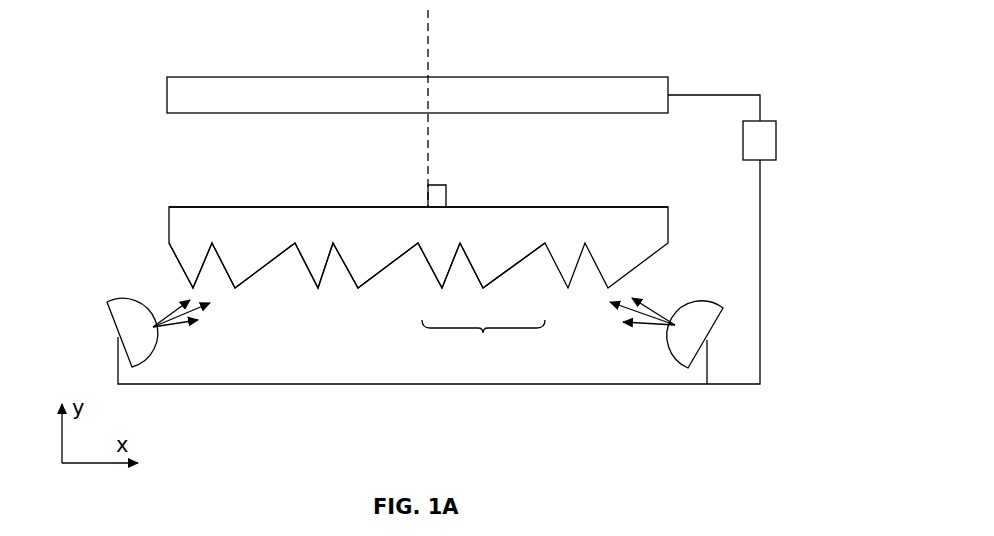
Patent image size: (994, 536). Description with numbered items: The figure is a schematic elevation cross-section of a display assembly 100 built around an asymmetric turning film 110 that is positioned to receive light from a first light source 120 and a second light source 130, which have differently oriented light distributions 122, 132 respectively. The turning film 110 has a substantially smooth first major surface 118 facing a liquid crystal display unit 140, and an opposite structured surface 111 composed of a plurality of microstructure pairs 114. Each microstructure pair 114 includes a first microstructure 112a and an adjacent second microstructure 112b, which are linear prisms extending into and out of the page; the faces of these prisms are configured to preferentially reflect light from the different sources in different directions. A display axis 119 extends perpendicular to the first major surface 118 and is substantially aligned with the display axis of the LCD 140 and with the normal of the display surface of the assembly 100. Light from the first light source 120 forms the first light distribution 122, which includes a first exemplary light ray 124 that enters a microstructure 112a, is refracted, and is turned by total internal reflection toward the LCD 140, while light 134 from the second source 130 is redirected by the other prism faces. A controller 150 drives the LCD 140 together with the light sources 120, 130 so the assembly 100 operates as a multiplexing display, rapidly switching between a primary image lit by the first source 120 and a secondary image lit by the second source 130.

The display assembly 100 is at (149, 35).
The asymmetric turning film 110 is at (210, 220).
The structured surface 111 is at (371, 316).
The first microstructure 112a is at (493, 262).
The second microstructure 112b is at (442, 268).
The microstructure pair 114 is at (483, 340).
The first major surface 118 is at (282, 207).
The display axis 119 is at (428, 138).
The first light source 120 is at (693, 317).
The first light distribution 122 is at (662, 328).
The first exemplary light ray 124 is at (612, 305).
The second light source 130 is at (127, 315).
The second light distribution 132 is at (158, 330).
The first light rays 134 is at (216, 302).
The liquid crystal display unit 140 is at (605, 85).
The controller 150 is at (777, 133).